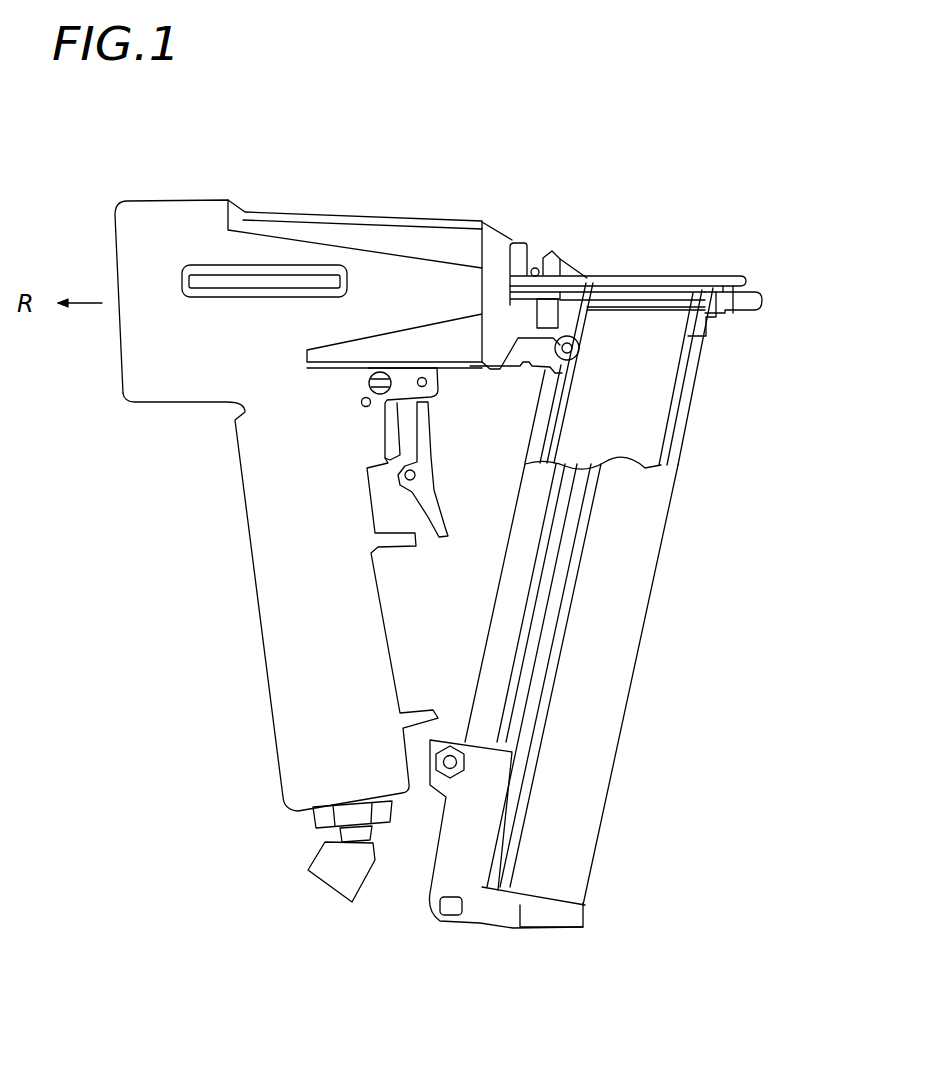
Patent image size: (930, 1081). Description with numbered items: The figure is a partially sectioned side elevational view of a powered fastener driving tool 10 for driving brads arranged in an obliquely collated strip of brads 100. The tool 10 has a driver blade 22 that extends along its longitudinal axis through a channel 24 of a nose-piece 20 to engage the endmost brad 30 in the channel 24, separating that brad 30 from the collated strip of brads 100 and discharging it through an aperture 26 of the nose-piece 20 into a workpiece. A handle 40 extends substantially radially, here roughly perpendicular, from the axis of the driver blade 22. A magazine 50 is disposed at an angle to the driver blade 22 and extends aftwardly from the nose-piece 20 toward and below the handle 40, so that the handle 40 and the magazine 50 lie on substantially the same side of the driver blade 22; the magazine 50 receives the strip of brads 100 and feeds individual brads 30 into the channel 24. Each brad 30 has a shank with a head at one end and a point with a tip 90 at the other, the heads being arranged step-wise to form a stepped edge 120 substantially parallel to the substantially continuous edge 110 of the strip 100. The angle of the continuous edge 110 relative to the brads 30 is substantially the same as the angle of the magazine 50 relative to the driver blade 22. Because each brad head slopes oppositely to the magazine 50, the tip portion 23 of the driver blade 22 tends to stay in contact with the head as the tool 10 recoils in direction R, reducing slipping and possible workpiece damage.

The fastener driving tool 10 is at (445, 158).
The nose-piece 20 is at (718, 274).
The driver blade 22 is at (540, 268).
The tip portion of the driver blade 23 is at (575, 290).
The channel 24 is at (730, 280).
The aperture 26 is at (752, 295).
The brad 30 is at (648, 290).
The handle 40 is at (252, 563).
The magazine 50 is at (638, 649).
The tip 90 is at (724, 318).
The obliquely collated strip of brads 100 is at (648, 395).
The substantially continuous edge 110 is at (684, 378).
The stepped edge 120 is at (558, 424).